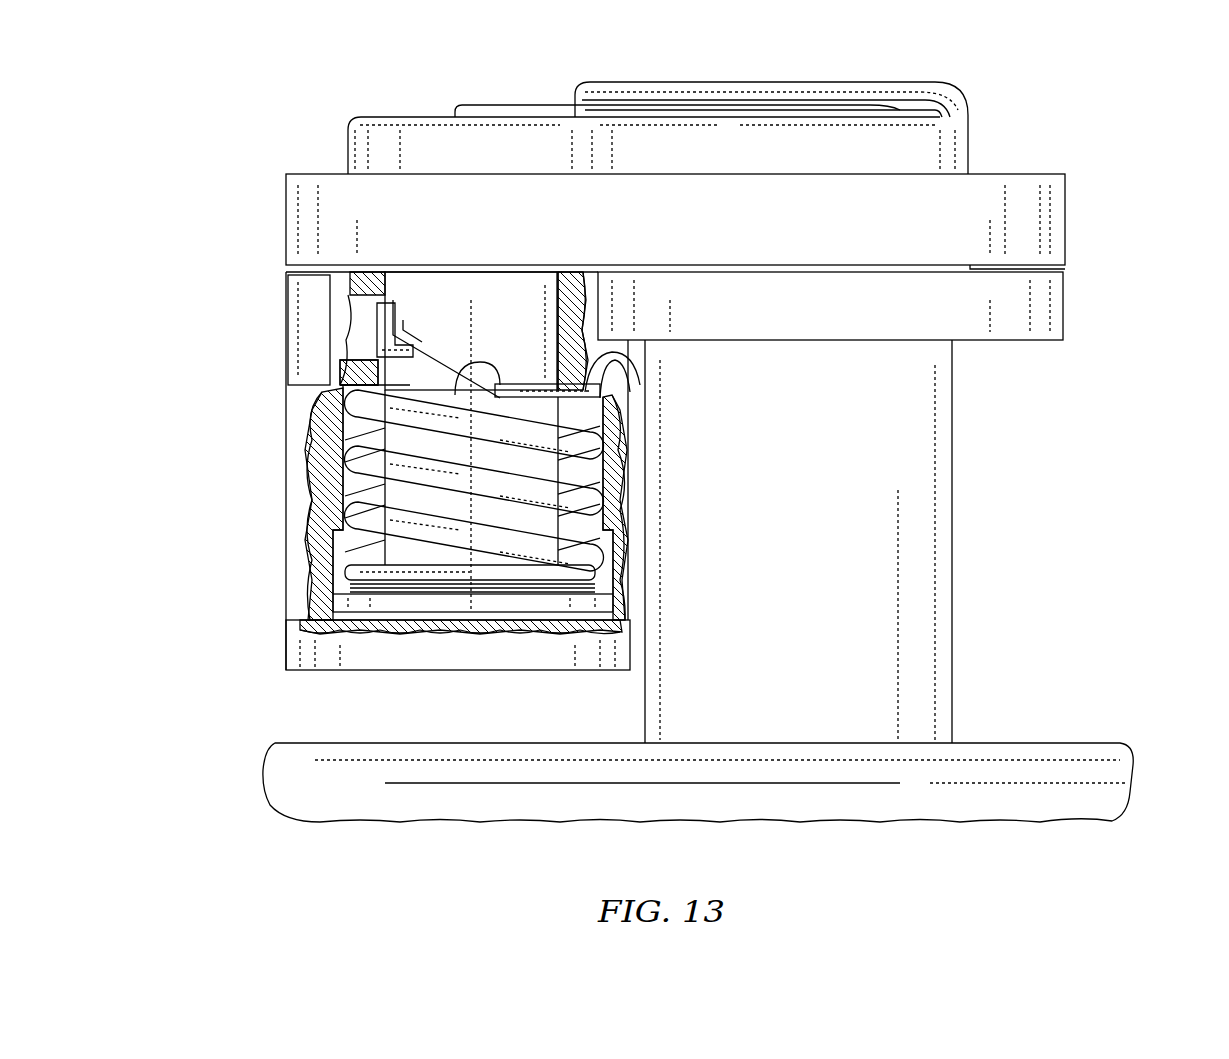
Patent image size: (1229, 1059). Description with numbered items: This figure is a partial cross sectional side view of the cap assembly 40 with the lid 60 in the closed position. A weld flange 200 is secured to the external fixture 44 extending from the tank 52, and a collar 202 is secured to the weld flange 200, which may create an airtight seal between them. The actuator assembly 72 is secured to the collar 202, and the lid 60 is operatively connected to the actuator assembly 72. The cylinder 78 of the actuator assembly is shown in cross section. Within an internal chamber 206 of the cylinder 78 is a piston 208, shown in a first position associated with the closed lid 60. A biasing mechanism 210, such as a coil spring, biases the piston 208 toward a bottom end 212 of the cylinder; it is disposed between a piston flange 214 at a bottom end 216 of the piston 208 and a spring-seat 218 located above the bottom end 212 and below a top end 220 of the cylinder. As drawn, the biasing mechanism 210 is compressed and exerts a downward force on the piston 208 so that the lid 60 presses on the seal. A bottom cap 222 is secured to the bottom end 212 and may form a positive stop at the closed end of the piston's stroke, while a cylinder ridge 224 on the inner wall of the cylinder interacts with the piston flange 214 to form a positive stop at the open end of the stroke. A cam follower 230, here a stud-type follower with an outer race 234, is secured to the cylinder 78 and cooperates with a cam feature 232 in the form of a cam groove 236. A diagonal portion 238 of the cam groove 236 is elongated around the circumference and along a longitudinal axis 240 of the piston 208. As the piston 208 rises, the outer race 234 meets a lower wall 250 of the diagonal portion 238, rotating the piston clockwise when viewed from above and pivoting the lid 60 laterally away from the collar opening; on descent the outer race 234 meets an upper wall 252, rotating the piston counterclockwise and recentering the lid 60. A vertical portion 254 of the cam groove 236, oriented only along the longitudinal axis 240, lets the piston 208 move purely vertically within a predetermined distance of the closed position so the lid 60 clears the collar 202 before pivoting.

The cap assembly 40 is at (1133, 110).
The external fixture 44 is at (953, 541).
The tank 52 is at (1068, 745).
The lid 60 is at (348, 152).
The actuator assembly 72 is at (266, 502).
The cylinder 78 is at (286, 534).
The weld flange 200 is at (1067, 304).
The collar 202 is at (1067, 222).
The internal chamber 206 is at (468, 480).
The piston 208 is at (500, 296).
The biasing mechanism 210 is at (350, 457).
The bottom end of the cylinder 212 is at (286, 600).
The piston flange 214 is at (552, 592).
The bottom end of the piston 216 is at (606, 605).
The spring-seat 218 is at (615, 358).
The top end of the cylinder 220 is at (286, 273).
The bottom cap 222 is at (445, 655).
The cylinder ridge 224 is at (612, 522).
The cam follower 230 is at (289, 330).
The outer race 234 is at (375, 334).
The cam feature 232 is at (459, 349).
The cam groove 236 is at (428, 375).
The diagonal portion 238 is at (455, 372).
The longitudinal axis 240 is at (370, 558).
The lower wall 250 is at (468, 480).
The upper wall 252 is at (590, 438).
The vertical portion 254 is at (400, 308).